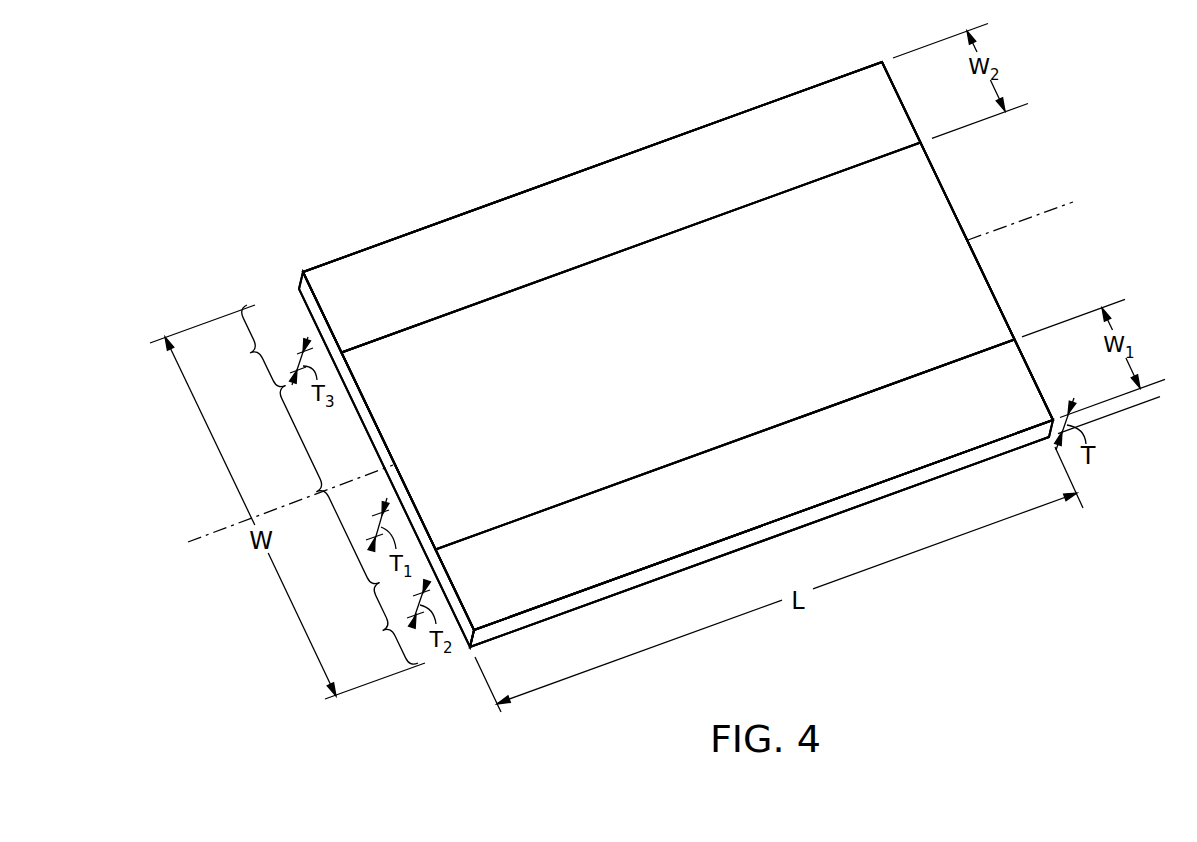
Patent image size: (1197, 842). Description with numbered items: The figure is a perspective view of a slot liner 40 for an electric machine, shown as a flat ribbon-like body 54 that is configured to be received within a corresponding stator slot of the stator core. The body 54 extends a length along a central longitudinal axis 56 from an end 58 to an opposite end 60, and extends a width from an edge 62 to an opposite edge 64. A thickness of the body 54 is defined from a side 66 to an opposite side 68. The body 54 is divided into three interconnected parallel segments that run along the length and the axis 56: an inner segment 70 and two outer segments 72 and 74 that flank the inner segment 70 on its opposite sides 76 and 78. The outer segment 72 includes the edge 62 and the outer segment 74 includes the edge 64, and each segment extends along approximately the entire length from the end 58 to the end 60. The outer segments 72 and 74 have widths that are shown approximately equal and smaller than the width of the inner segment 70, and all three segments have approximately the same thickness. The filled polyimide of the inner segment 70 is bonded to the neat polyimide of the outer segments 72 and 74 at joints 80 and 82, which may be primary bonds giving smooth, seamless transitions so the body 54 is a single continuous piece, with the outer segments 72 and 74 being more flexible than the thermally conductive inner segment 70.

The slot liner 40 is at (1020, 76).
The body 54 is at (430, 236).
The central longitudinal axis 56 is at (223, 531).
The end 58 is at (465, 650).
The end 60 is at (1017, 308).
The edge 62 is at (628, 589).
The edge 64 is at (588, 167).
The side 66 is at (945, 211).
The side 68 is at (830, 518).
The inner segment 70 is at (316, 492).
The outer segment 72 is at (382, 631).
The outer segment 74 is at (250, 353).
The side of inner segment 76 is at (697, 454).
The side of inner segment 78 is at (733, 208).
The joint 80 is at (898, 383).
The joint 82 is at (343, 356).